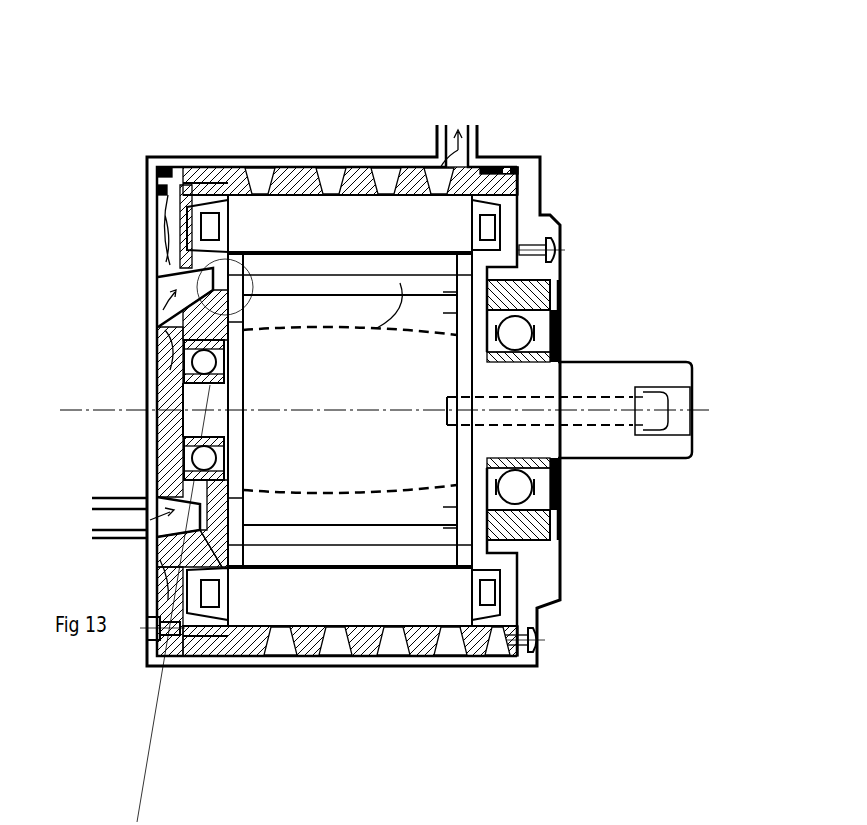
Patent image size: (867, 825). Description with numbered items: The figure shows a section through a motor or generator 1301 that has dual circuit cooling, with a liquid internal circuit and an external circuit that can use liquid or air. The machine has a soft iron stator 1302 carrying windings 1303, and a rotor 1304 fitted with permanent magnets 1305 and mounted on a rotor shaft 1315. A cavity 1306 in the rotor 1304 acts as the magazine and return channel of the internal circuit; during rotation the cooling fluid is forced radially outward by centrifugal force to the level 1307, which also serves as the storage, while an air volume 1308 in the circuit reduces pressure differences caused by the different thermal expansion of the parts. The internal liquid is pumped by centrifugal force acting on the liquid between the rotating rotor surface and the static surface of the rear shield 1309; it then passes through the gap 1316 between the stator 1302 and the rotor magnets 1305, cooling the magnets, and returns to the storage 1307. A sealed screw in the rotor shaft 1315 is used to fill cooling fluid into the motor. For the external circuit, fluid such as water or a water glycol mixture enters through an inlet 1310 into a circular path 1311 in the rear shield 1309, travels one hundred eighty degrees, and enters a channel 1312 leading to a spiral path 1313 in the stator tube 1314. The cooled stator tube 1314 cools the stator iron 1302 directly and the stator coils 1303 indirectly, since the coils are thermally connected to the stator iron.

The motor or generator 1301 is at (376, 213).
The soft iron stator 1302 is at (404, 155).
The windings 1303 is at (545, 211).
The rotor 1304 is at (393, 660).
The permanent magnets 1305 is at (423, 658).
The cavity 1306 is at (357, 657).
The level 1307 is at (358, 347).
The air volume 1308 is at (300, 250).
The rear shield 1309 is at (147, 283).
The inlet 1310 is at (143, 518).
The circular path 1311 is at (140, 277).
The channel 1312 is at (147, 228).
The spiral path 1313 is at (233, 170).
The stator tube 1314 is at (253, 657).
The rotor shaft 1315 is at (673, 440).
The gap 1316 is at (268, 195).